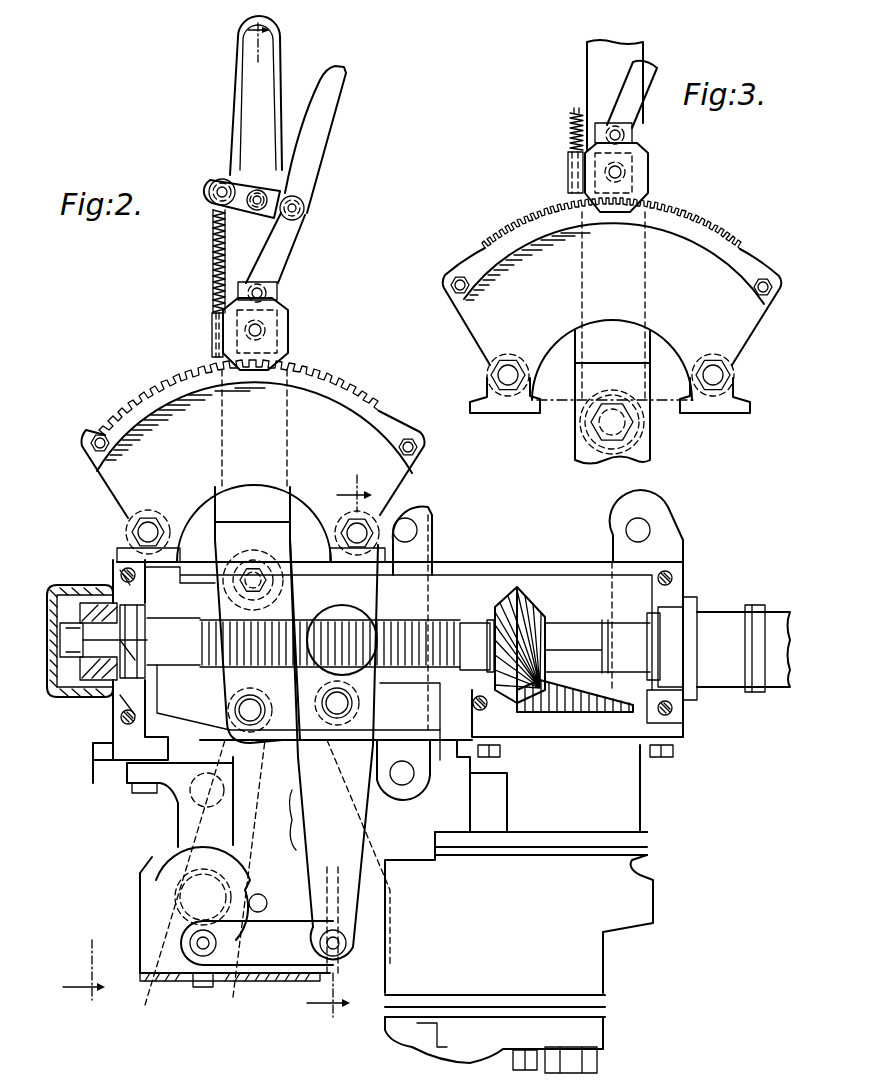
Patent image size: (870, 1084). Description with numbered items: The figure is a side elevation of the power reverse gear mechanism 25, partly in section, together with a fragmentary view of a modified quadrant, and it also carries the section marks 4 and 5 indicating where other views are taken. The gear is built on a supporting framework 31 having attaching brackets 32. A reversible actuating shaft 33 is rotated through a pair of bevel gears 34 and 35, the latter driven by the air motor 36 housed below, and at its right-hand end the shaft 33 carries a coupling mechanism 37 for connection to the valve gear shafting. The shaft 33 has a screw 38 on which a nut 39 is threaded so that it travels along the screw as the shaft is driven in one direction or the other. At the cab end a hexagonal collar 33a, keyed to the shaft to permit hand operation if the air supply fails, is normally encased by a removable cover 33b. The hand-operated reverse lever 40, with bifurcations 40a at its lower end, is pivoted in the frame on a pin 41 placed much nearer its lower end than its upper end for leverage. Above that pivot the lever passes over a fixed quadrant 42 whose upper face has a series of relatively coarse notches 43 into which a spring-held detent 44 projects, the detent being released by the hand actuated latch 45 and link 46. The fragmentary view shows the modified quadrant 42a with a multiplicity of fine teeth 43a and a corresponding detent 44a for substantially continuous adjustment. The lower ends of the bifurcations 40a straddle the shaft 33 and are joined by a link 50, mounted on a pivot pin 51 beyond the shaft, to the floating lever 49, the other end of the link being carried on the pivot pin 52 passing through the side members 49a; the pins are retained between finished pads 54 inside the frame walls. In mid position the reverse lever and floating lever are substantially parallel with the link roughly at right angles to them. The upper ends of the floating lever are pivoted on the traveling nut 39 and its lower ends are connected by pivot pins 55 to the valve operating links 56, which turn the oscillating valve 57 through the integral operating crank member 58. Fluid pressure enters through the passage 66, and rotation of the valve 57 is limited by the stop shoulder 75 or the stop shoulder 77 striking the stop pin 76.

In FIG. 2, the power reverse gear mechanism 25 is at (655, 783).
In FIG. 2, the supporting framework 31 is at (188, 563).
In FIG. 2, the attaching brackets 32 is at (425, 518).
In FIG. 2, the reversible actuating shaft 33 is at (472, 633).
In FIG. 2, the hexagonal collar 33a is at (95, 603).
In FIG. 2, the removable cover 33b is at (48, 638).
In FIG. 2, the bevel gear 34 is at (532, 607).
In FIG. 2, the bevel gear 35 is at (577, 703).
In FIG. 2, the air motor 36 is at (519, 906).
In FIG. 2, the coupling mechanism 37 is at (745, 608).
In FIG. 2, the screw 38 is at (440, 627).
In FIG. 2, the nut 39 is at (327, 620).
In FIG. 2, the hand-operated reverse lever 40 is at (285, 292).
In FIG. 3, the hand-operated reverse lever 40 is at (593, 92).
In FIG. 2, the bifurcations 40a is at (222, 602).
In FIG. 2, the pin 41 is at (258, 575).
In FIG. 3, the pin 41 is at (598, 430).
In FIG. 2, the fixed quadrant 42 is at (143, 433).
In FIG. 3, the quadrant 42a is at (740, 342).
In FIG. 2, the notches 43 is at (365, 393).
In FIG. 3, the fine teeth 43a is at (723, 232).
In FIG. 2, the spring-held detent 44 is at (257, 348).
In FIG. 3, the detent 44a is at (637, 173).
In FIG. 2, the hand actuated latch 45 is at (323, 127).
In FIG. 2, the link 46 is at (290, 237).
In FIG. 3, the link 46 is at (630, 87).
In FIG. 2, the floating lever 49 is at (287, 733).
In FIG. 2, the side members 49a is at (349, 759).
In FIG. 2, the link 50 is at (283, 720).
In FIG. 2, the pivot pin 51 is at (247, 712).
In FIG. 2, the pivot pin 52 is at (340, 703).
In FIG. 2, the finished pads 54 is at (407, 713).
In FIG. 2, the pivot pins 55 is at (347, 947).
In FIG. 2, the valve operating links 56 is at (257, 943).
In FIG. 2, the oscillating valve 57 is at (176, 885).
In FIG. 2, the integral operating crank member 58 is at (158, 903).
In FIG. 2, the passage 66 is at (192, 797).
In FIG. 2, the stop shoulder 75 is at (237, 860).
In FIG. 2, the stop pin 76 is at (261, 900).
In FIG. 2, the stop shoulder 77 is at (245, 880).
In FIG. 2, the section line 4 is at (166, 520).
In FIG. 2, the section line 5 is at (339, 750).